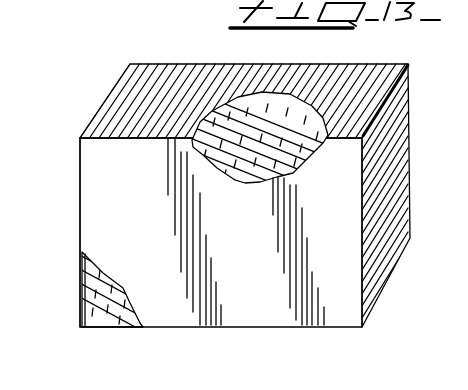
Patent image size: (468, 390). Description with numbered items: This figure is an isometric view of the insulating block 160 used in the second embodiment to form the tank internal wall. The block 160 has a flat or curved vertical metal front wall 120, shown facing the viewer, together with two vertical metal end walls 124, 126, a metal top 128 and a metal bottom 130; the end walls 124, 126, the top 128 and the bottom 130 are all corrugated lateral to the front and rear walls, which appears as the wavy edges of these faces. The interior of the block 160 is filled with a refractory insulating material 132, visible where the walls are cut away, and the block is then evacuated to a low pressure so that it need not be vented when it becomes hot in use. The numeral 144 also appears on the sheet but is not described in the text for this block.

The insulating block 160 is at (96, 91).
The metal top 128 is at (168, 80).
The vertical metal end wall 126 is at (393, 143).
The vertical metal end wall 124 is at (80, 200).
The refractory insulating material 132 is at (303, 168).
The reference region 144 is at (452, 192).
The metal bottom 130 is at (150, 330).
The metal front wall 120 is at (271, 304).